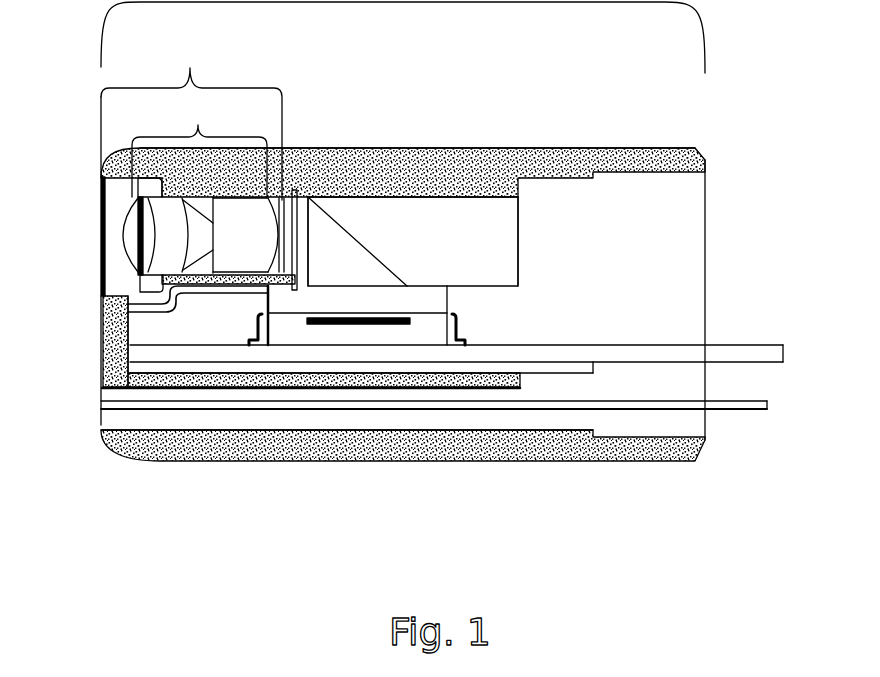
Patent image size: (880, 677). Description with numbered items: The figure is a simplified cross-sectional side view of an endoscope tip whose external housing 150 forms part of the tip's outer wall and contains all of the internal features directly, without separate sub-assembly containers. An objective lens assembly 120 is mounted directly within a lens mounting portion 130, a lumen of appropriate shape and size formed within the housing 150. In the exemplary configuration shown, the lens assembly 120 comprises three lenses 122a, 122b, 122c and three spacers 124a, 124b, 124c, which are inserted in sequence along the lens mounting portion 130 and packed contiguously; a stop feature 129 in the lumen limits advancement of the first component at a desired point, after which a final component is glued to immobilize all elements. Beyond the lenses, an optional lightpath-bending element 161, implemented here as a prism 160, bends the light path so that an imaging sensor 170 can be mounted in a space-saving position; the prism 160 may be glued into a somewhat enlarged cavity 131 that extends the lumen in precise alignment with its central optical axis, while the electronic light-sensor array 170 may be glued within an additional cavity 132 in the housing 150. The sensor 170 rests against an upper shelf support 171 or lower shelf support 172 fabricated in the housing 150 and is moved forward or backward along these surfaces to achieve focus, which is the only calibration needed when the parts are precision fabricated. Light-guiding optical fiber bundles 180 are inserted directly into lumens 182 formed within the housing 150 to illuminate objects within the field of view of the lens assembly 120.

The objective lens assembly 120 is at (199, 147).
The lens 122a is at (115, 222).
The lens 122b is at (165, 240).
The lens 122c is at (253, 247).
The spacer 124a is at (152, 278).
The spacer 124b is at (137, 367).
The spacer 124c is at (290, 258).
The stop feature 129 is at (278, 205).
The lens mounting portion 130 is at (192, 165).
The cavity 131 is at (462, 245).
The cavity 132 is at (575, 315).
The external housing 150 is at (433, 158).
The prism 160 is at (348, 238).
The lightpath-bending element 161 is at (322, 235).
The imaging sensor 170 is at (413, 335).
The upper shelf support 171 is at (250, 280).
The lower shelf support 172 is at (482, 370).
The light-guiding optical fiber bundle 180 is at (292, 410).
The lumen 182 is at (213, 397).